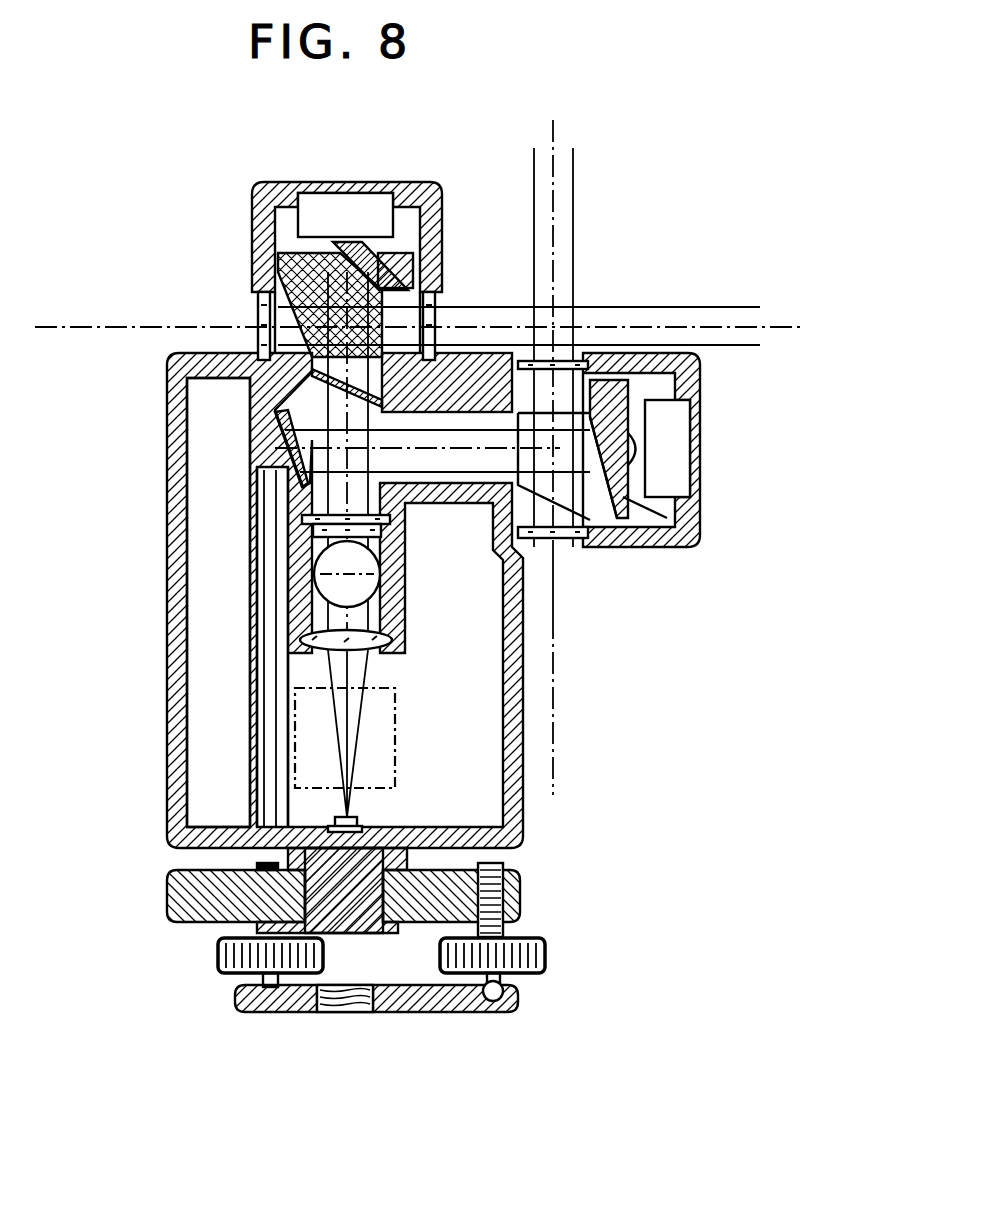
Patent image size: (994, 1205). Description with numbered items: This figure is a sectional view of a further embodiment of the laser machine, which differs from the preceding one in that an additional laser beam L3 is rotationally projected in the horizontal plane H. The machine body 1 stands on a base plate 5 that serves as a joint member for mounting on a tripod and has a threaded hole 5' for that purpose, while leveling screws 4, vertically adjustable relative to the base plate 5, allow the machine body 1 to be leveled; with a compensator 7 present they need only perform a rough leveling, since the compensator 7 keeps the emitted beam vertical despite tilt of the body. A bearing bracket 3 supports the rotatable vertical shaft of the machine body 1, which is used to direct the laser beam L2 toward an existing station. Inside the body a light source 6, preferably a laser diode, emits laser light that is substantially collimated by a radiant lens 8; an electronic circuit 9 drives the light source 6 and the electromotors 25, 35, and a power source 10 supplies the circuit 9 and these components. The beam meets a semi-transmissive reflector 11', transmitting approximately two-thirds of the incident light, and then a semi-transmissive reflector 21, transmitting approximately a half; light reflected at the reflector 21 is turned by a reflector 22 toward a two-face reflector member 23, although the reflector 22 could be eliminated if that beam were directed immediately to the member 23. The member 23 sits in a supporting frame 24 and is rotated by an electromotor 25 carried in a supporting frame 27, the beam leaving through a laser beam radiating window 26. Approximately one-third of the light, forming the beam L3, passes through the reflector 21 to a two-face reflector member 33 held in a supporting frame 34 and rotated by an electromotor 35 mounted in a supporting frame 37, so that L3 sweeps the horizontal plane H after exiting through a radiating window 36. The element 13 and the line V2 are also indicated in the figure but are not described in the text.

The machine body 1 is at (172, 410).
The bearing bracket 3 is at (520, 893).
The leveling screws 4 is at (217, 960).
The base plate 5 is at (423, 995).
The threaded hole 5' is at (372, 1028).
The light source 6 is at (357, 818).
The compensator 7 is at (395, 742).
The radiant lens 8 is at (358, 648).
The electronic circuit 9 is at (268, 668).
The power source 10 is at (213, 592).
The semi-transmissive reflector 11' is at (387, 563).
The objective lens 13 is at (335, 562).
The semi-transmissive reflector 21 is at (355, 405).
The reflector 22 is at (268, 437).
The two-face reflector member 23 is at (625, 522).
The supporting frame 24 is at (693, 535).
The electromotor 25 is at (675, 415).
The laser beam radiating window 26 is at (562, 540).
The supporting frame 27 is at (702, 455).
The two-face reflector member 33 is at (303, 282).
The supporting frame 34 is at (397, 267).
The electromotor 35 is at (380, 207).
The laser beam radiating window 36 is at (260, 313).
The supporting frame 37 is at (283, 192).
The horizontal plane H is at (65, 322).
The vertical axis V2 is at (553, 170).
The laser beam L2 is at (565, 226).
The additional laser beam L3 is at (663, 312).